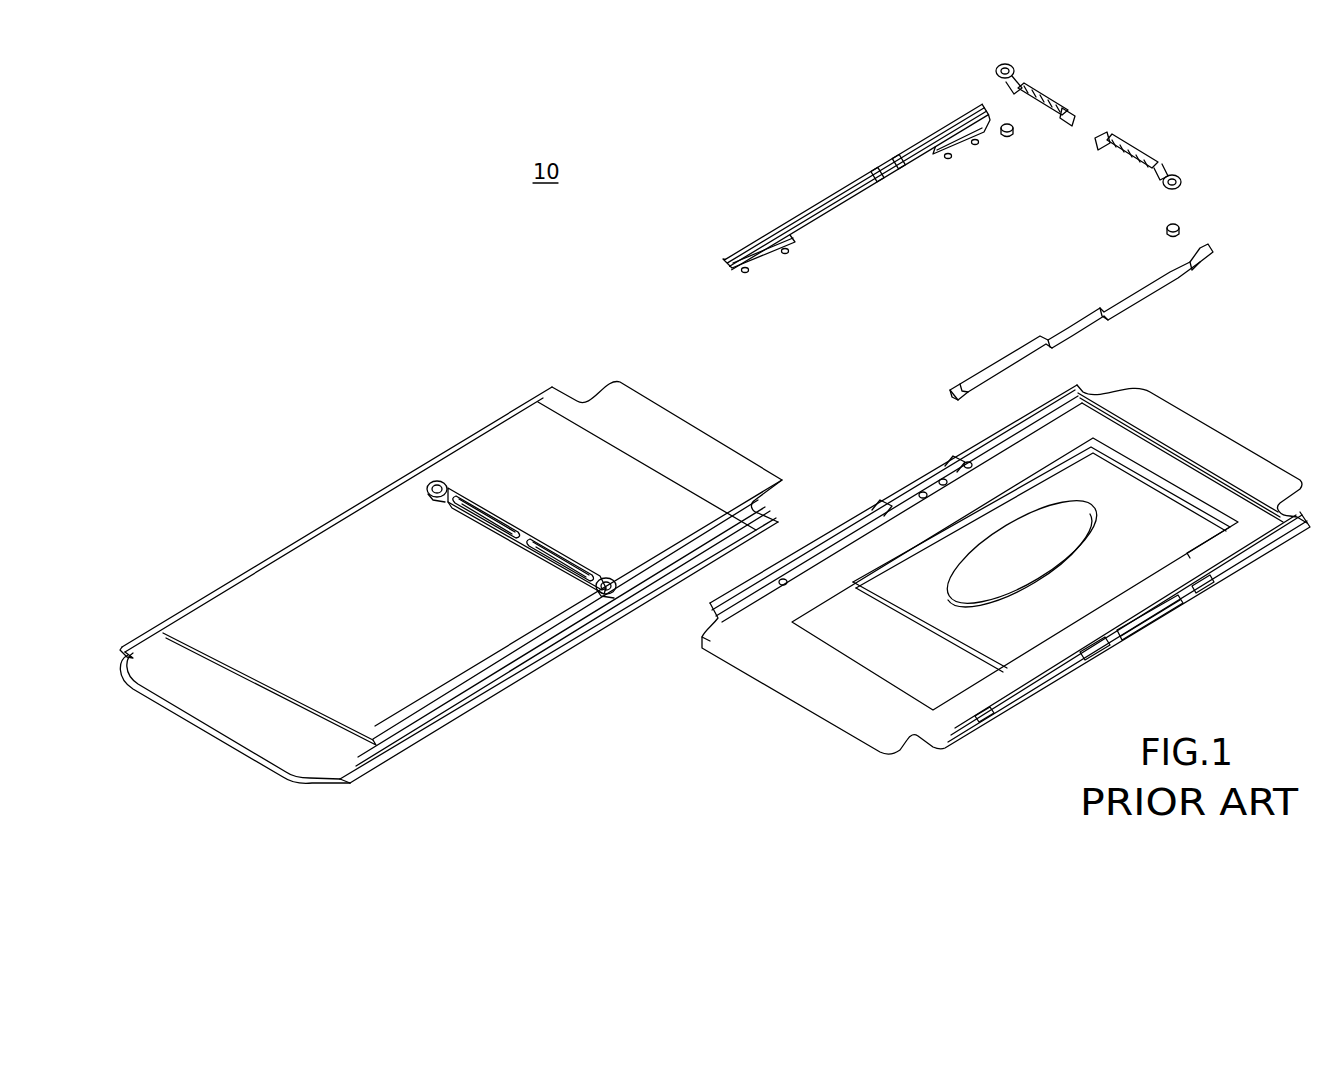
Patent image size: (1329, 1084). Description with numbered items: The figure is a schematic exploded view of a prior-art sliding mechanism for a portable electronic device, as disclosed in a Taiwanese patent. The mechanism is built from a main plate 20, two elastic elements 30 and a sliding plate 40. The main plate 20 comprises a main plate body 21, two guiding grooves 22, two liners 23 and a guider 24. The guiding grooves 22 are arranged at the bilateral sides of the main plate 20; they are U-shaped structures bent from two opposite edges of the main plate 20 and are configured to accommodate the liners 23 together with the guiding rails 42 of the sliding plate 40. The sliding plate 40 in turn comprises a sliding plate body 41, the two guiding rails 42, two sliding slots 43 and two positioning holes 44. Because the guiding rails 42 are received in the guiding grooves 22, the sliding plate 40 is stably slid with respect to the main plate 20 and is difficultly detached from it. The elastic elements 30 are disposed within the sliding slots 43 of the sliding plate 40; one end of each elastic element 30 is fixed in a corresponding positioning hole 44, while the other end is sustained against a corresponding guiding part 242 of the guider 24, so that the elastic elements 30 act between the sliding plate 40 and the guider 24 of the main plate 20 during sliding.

The main plate 20 is at (1172, 414).
The main plate body 21 is at (1235, 458).
The guiding grooves 22 is at (922, 748).
The liners 23 is at (800, 208).
The guider 24 is at (1055, 540).
The guiding part 242 is at (1022, 580).
The elastic elements 30 is at (1132, 130).
The sliding plate 40 is at (356, 489).
The sliding plate body 41 is at (485, 655).
The guiding rails 42 is at (248, 572).
The sliding slots 43 is at (497, 497).
The positioning holes 44 is at (432, 486).